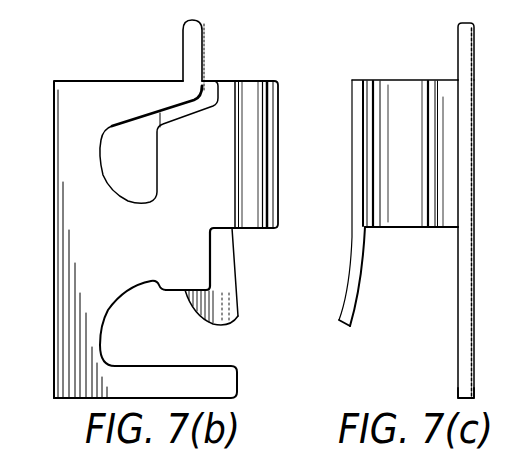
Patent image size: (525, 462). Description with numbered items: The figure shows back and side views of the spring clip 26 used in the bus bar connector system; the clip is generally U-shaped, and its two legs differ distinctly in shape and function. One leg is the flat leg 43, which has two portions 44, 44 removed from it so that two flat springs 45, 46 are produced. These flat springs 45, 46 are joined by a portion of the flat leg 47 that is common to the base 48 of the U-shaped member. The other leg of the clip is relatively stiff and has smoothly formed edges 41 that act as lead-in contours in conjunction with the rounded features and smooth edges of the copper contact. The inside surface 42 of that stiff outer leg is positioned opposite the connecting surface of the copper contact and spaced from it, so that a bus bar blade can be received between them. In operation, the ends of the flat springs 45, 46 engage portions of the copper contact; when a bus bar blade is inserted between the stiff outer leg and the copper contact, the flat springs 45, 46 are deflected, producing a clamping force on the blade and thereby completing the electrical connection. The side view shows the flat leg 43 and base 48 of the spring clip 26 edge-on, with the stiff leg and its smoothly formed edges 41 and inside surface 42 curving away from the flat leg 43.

In FIG. 7B, the spring clip 26 is at (137, 58).
In FIG. 7C, the spring clip 26 is at (350, 46).
In FIG. 7C, the smoothly formed edges 41 is at (351, 319).
In FIG. 7C, the inside surface of the outer leg 42 is at (362, 238).
In FIG. 7B, the flat leg 43 is at (54, 120).
In FIG. 7C, the flat leg 43 is at (467, 222).
In FIG. 7B, the removed portions 44 is at (139, 165).
In FIG. 7B, the flat spring 45 is at (193, 60).
In FIG. 7C, the flat spring 45 is at (473, 42).
In FIG. 7B, the flat spring 46 is at (225, 383).
In FIG. 7C, the flat spring 46 is at (465, 388).
In FIG. 7B, the portion of the flat leg 47 is at (192, 258).
In FIG. 7B, the base 48 is at (268, 178).
In FIG. 7C, the base 48 is at (408, 88).